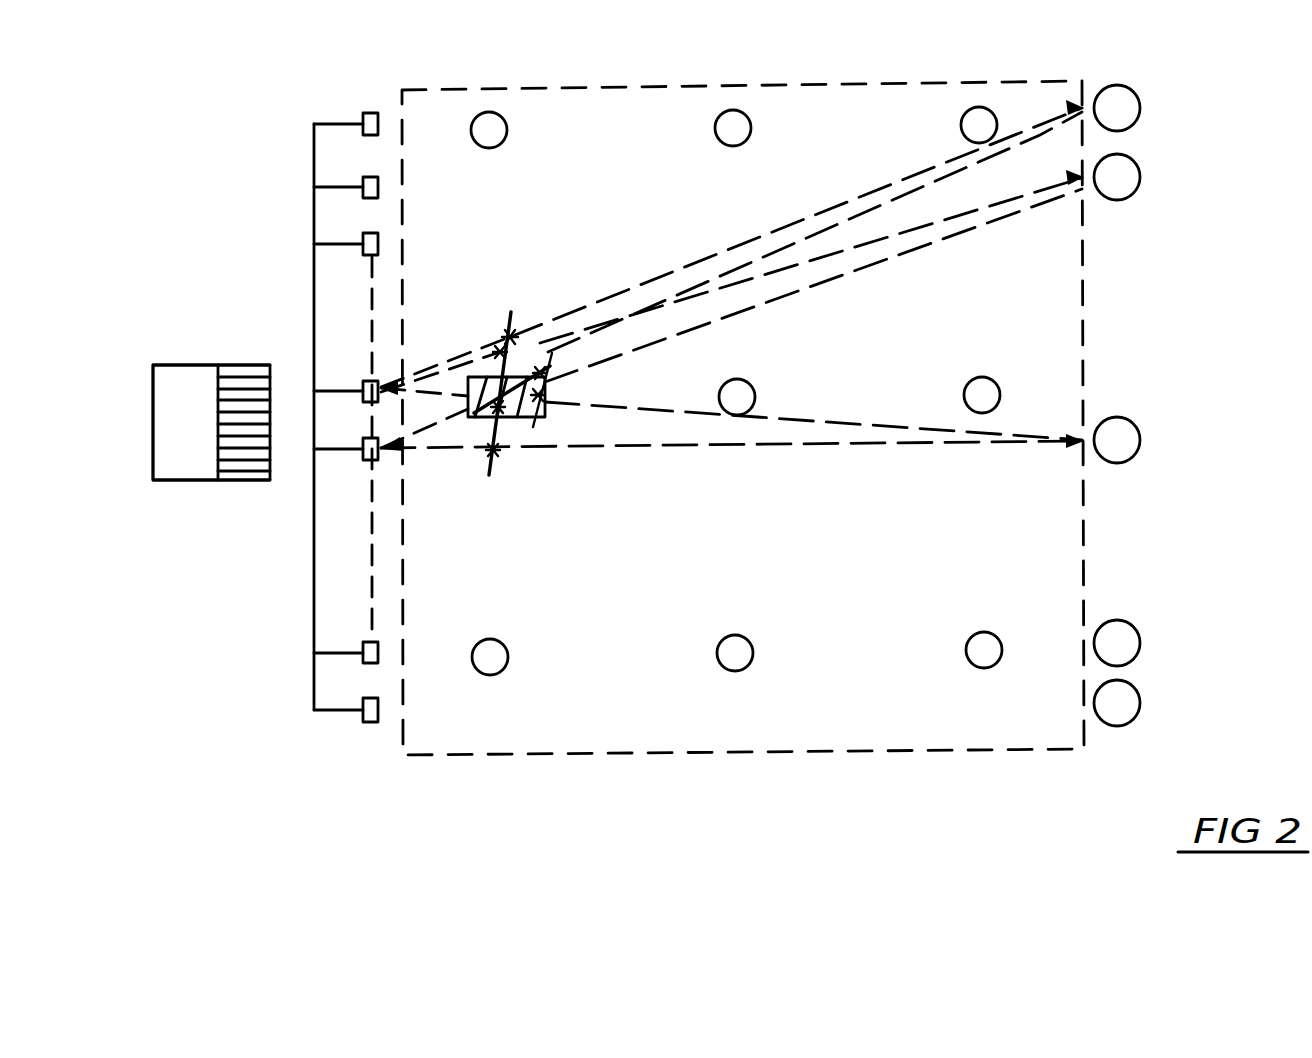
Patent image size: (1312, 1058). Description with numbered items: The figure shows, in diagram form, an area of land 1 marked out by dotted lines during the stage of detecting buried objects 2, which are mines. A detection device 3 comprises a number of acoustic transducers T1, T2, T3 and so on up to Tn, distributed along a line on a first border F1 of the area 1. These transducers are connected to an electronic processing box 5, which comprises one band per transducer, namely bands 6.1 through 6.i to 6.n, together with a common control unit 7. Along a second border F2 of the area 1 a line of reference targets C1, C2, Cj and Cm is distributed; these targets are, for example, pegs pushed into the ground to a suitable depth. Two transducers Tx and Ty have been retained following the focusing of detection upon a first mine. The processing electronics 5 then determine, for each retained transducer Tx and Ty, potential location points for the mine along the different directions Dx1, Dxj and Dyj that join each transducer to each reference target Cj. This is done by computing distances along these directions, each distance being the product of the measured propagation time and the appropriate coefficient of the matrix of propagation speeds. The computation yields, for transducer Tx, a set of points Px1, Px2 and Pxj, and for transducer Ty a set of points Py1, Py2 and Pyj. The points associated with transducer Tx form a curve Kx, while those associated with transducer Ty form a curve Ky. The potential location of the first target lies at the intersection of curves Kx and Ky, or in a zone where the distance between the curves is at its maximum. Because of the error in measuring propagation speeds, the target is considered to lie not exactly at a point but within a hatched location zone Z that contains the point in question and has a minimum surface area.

The area of land 1 is at (830, 724).
The objects 2 is at (497, 668).
The detection device 3 is at (175, 138).
The electronic processing box 5 is at (170, 350).
The band 6.1 is at (240, 372).
The band 6.i is at (255, 423).
The band 6.n is at (240, 479).
The common control unit 7 is at (182, 473).
The acoustic transducer T1 is at (370, 122).
The acoustic transducer T2 is at (370, 187).
The acoustic transducer T3 is at (370, 242).
The retained transducer Tx is at (365, 398).
The retained transducer Ty is at (365, 458).
The acoustic transducer Tn is at (370, 722).
The reference target C1 is at (1122, 107).
The reference target C2 is at (1122, 182).
The reference target Cj is at (1122, 442).
The reference target Cm is at (1122, 706).
The first border F1 is at (418, 742).
The second border F2 is at (1072, 711).
The location zone Z is at (533, 420).
The curve Kx is at (505, 375).
The curve Ky is at (538, 444).
The potential location point Px1 is at (511, 328).
The potential location point Px2 is at (500, 368).
The potential location point Pxj is at (547, 393).
The potential location point Py1 is at (540, 372).
The potential location point Py2 is at (495, 418).
The potential location point Pyj is at (496, 452).
The direction Dx1 is at (796, 222).
The direction Dxj is at (813, 415).
The direction Dyj is at (731, 434).